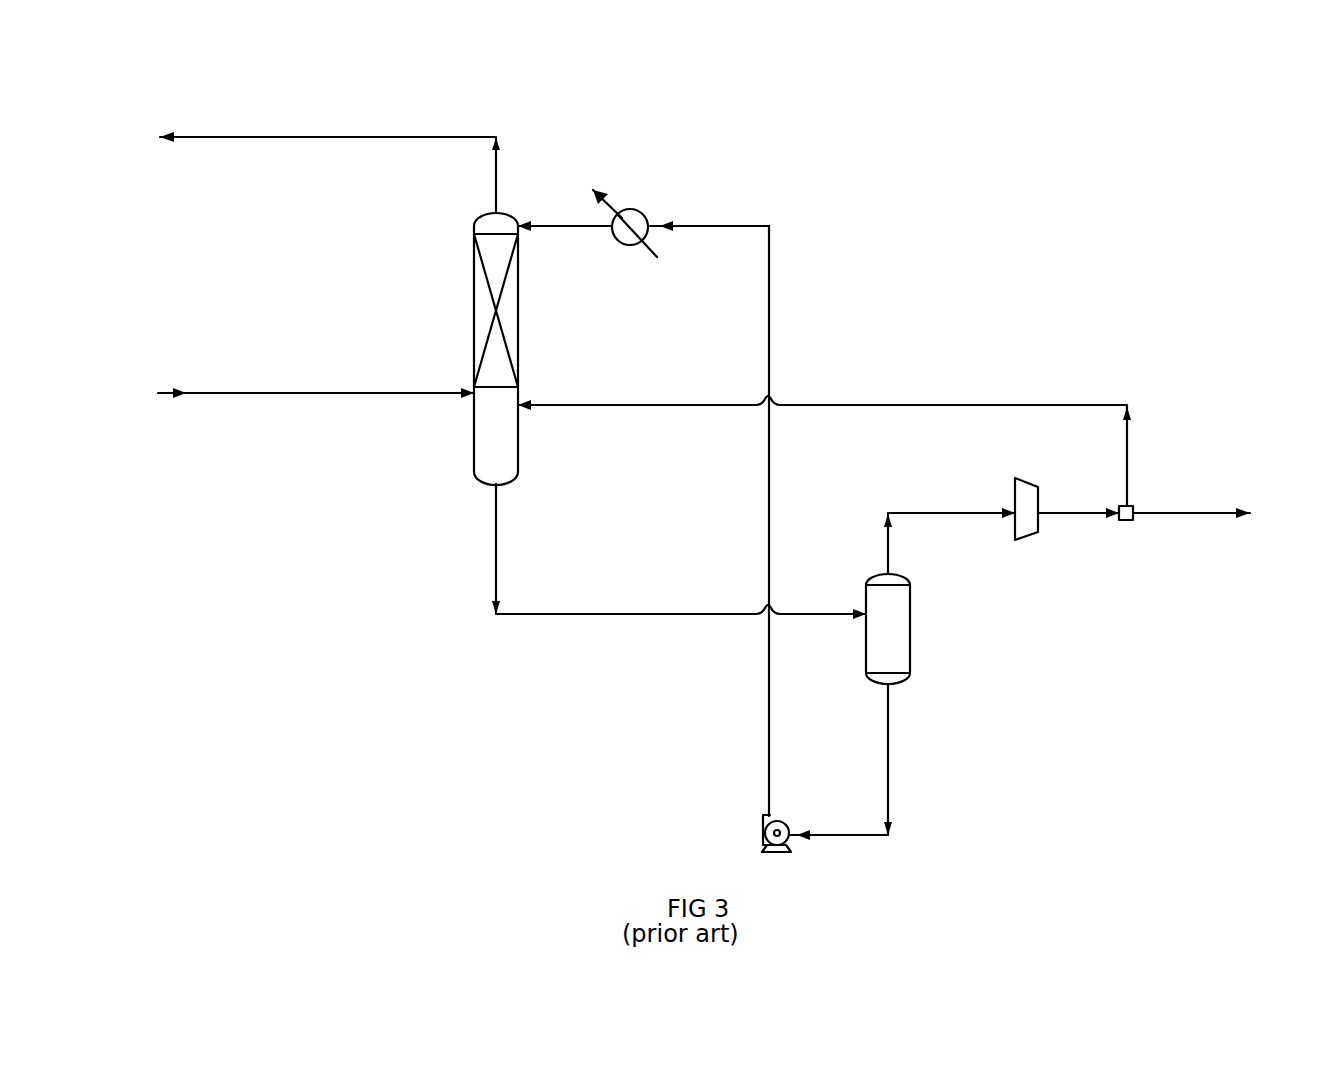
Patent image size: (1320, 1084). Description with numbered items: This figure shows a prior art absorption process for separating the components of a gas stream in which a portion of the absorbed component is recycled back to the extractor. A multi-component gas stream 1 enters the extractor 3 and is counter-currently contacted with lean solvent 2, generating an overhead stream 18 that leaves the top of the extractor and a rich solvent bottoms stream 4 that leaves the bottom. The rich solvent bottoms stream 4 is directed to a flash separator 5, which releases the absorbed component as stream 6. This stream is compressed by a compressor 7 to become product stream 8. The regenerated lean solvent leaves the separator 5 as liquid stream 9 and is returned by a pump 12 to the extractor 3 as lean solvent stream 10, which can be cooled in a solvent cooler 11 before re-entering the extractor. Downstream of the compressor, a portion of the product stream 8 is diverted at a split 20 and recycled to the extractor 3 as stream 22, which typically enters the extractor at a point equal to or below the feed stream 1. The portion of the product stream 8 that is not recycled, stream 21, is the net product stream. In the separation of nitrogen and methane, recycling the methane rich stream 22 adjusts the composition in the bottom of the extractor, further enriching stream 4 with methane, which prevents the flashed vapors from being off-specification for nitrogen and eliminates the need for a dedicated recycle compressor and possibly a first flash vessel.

The multi-component gas stream 1 is at (265, 393).
The lean solvent 2 is at (537, 226).
The extractor 3 is at (473, 292).
The rich solvent bottoms stream 4 is at (531, 614).
The flash separator 5 is at (910, 615).
The released component stream 6 is at (953, 513).
The compressor 7 is at (1030, 483).
The product stream 8 is at (1063, 513).
The liquid stream 9 is at (853, 835).
The lean solvent stream 10 is at (769, 343).
The solvent cooler 11 is at (632, 245).
The pump 12 is at (764, 836).
The overhead stream 18 is at (268, 137).
The split 20 is at (1130, 520).
The net product stream 21 is at (1188, 513).
The recycle stream 22 is at (899, 405).